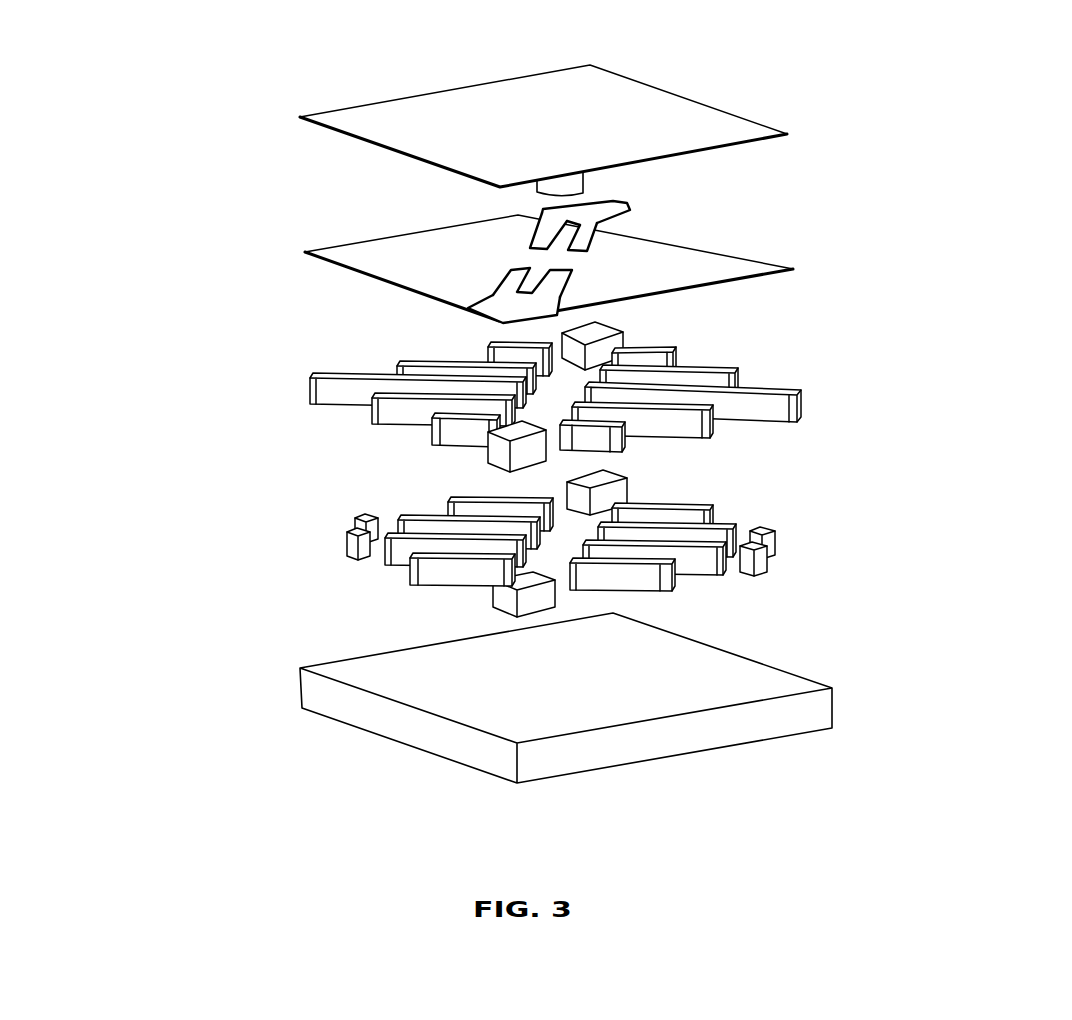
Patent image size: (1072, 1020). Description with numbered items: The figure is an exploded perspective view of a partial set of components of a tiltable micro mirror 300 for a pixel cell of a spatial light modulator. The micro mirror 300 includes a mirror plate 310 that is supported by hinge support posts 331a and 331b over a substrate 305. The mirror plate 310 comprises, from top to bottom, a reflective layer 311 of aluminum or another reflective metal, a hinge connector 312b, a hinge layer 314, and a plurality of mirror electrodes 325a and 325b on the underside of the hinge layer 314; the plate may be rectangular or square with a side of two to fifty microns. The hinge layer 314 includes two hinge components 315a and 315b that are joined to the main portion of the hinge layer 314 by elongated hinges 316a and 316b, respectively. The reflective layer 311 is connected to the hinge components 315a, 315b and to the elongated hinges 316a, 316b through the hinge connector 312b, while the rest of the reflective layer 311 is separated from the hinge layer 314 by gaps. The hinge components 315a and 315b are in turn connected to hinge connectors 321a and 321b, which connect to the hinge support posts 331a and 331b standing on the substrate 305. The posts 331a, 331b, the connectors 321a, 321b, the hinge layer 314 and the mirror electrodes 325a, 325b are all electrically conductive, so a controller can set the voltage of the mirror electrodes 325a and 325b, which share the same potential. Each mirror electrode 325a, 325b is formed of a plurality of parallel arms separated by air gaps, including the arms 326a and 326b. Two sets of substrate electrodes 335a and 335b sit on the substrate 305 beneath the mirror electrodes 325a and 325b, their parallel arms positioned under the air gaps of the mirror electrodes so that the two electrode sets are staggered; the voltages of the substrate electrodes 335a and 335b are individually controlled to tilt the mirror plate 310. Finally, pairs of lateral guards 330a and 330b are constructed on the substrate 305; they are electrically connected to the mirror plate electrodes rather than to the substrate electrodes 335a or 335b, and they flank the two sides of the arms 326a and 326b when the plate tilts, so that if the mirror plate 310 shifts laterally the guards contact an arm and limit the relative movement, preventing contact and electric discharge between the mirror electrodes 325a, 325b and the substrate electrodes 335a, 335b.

The micro mirror 300 is at (798, 43).
The substrate 305 is at (597, 700).
The mirror plate 310 is at (918, 71).
The reflective layer 311 is at (473, 139).
The hinge connector 312b is at (553, 188).
The hinge layer 314 is at (458, 278).
The hinge component 315a is at (595, 212).
The hinge component 315b is at (503, 310).
The elongated hinge 316a is at (563, 238).
The elongated hinge 316b is at (532, 285).
The hinge connector 321a is at (597, 333).
The hinge connector 321b is at (500, 452).
The mirror electrode 325a is at (815, 339).
The mirror electrode 325b is at (268, 340).
The arm 326a is at (772, 357).
The arm 326b is at (345, 370).
The lateral guard 330a is at (771, 558).
The lateral guard 330b is at (353, 518).
The hinge support post 331a is at (605, 480).
The hinge support post 331b is at (505, 598).
The substrate electrode 335a is at (670, 530).
The substrate electrode 335b is at (422, 520).